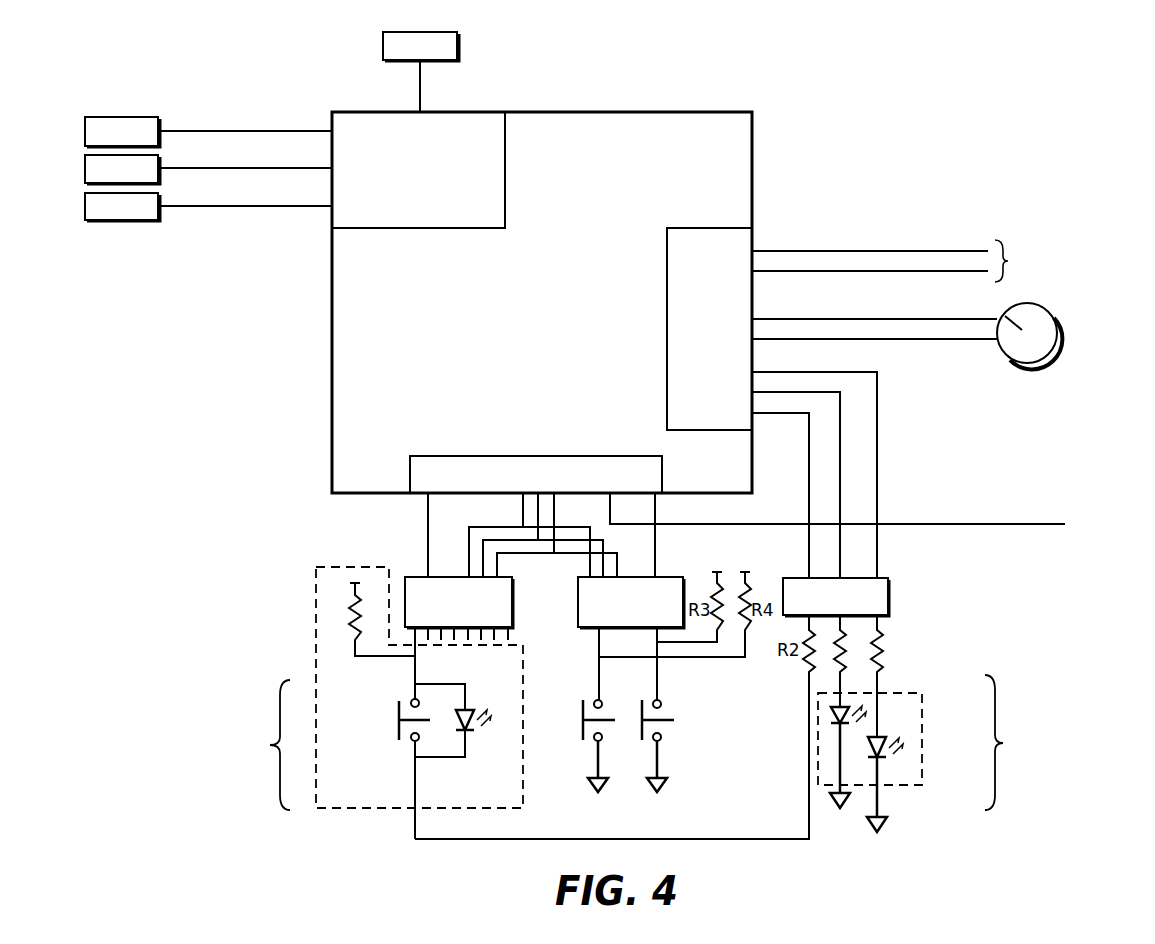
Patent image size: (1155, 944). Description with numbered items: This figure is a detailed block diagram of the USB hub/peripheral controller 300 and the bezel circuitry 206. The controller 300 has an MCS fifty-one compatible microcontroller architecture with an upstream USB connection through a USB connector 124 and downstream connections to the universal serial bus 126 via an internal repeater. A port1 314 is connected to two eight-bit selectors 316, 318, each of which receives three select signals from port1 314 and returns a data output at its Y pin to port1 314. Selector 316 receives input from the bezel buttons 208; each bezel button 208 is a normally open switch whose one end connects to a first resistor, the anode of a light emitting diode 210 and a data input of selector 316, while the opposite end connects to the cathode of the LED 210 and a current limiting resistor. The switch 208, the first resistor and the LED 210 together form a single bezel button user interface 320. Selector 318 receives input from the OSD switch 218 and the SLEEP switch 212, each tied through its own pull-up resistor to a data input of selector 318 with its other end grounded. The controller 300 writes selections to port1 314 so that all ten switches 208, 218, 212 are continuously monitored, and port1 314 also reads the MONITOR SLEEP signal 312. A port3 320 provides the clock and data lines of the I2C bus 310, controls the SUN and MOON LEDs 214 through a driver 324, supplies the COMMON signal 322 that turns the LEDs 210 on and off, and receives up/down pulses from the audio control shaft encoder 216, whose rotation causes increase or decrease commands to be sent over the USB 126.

The USB connector 124 is at (445, 61).
The universal serial bus 126 is at (208, 131).
The USB hub/peripheral controller 300 is at (752, 130).
The I2C bus 310 is at (918, 256).
The audio control shaft encoder 216 is at (1040, 360).
The port3 320 is at (665, 378).
The port1 314 is at (432, 455).
The MONITOR SLEEP signal 312 is at (997, 525).
The selector 316 is at (515, 583).
The selector 318 is at (580, 610).
The driver 324 is at (890, 596).
The SUN and MOON LEDs 214 is at (905, 693).
The COMMON signal 322 is at (760, 840).
The bezel circuitry 206 is at (365, 711).
The bezel button 208 is at (397, 713).
The light emitting diode 210 is at (470, 733).
The OSD switch 218 is at (582, 712).
The SLEEP switch 212 is at (641, 712).